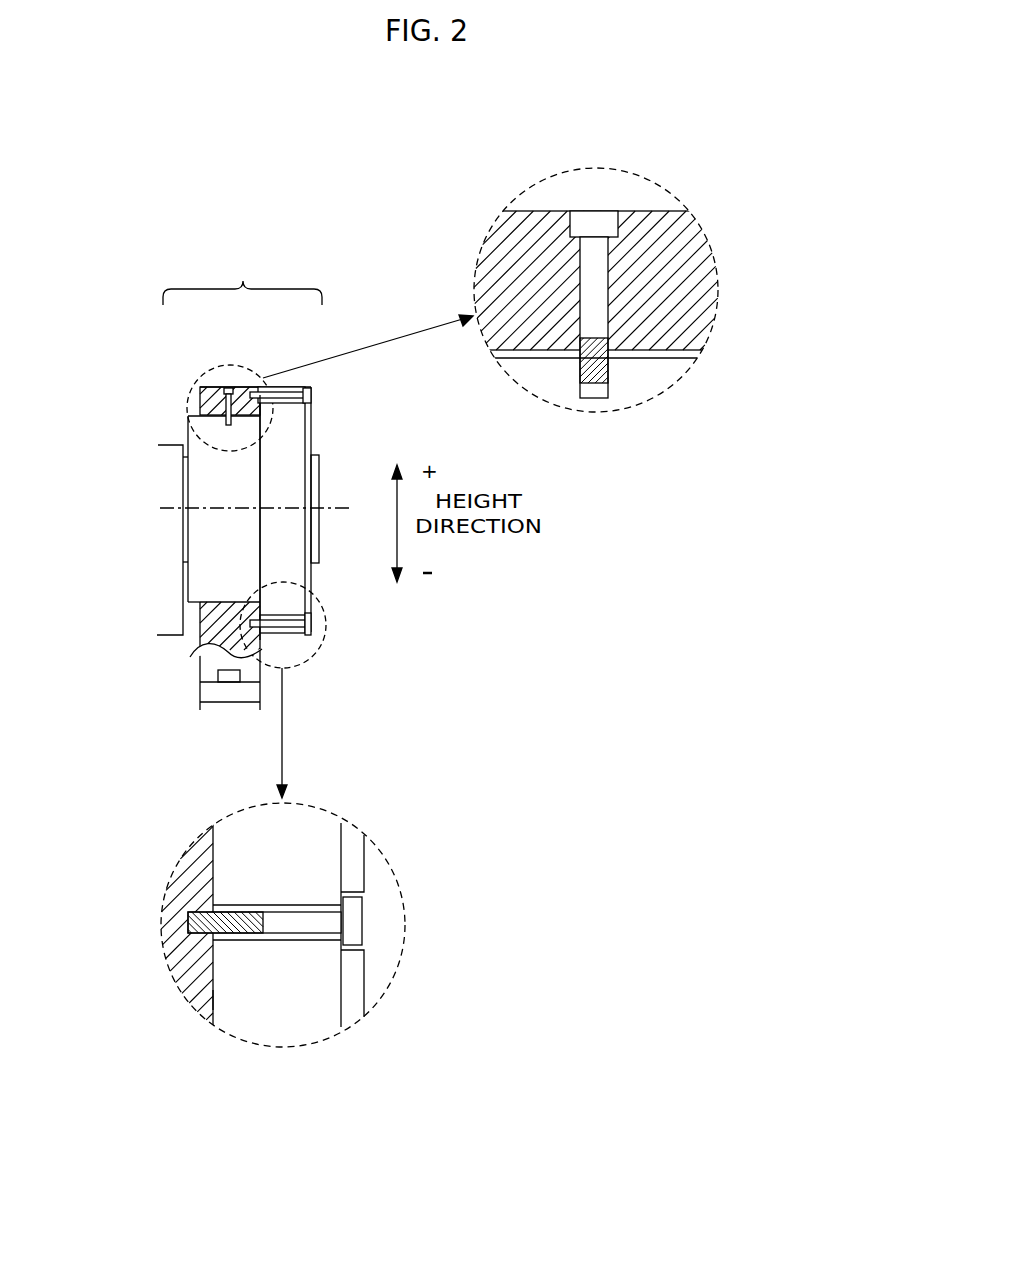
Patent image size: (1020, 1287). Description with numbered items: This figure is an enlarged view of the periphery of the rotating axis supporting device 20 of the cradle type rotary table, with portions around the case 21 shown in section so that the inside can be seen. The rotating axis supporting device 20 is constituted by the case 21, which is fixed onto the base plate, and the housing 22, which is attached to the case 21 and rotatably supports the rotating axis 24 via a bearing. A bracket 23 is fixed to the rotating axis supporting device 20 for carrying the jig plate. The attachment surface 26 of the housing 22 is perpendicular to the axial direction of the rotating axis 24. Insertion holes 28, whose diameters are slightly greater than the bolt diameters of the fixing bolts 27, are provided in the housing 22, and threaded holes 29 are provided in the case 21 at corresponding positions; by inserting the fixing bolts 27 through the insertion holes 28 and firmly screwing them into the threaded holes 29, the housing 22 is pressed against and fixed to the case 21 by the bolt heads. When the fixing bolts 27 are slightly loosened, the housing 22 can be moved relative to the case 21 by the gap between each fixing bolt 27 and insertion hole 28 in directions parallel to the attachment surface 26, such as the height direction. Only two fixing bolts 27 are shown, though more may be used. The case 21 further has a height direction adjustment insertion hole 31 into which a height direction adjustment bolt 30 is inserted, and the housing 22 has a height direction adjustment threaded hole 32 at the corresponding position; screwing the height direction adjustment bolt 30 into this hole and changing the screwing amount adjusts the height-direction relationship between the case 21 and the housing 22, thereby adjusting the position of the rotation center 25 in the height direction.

The rotating axis supporting device 20 is at (242, 275).
The case 21 is at (193, 636).
The housing 22 is at (290, 572).
The bracket 23 is at (163, 460).
The rotating axis 24 is at (320, 457).
The rotation center 25 is at (166, 508).
The attachment surface 26 is at (262, 416).
The fixing bolt 27 is at (312, 397).
The insertion hole 28 is at (330, 935).
The threaded hole 29 is at (188, 918).
The height direction adjustment bolt 30 is at (228, 386).
The height direction adjustment insertion hole 31 is at (550, 347).
The height direction adjustment threaded hole 32 is at (601, 400).